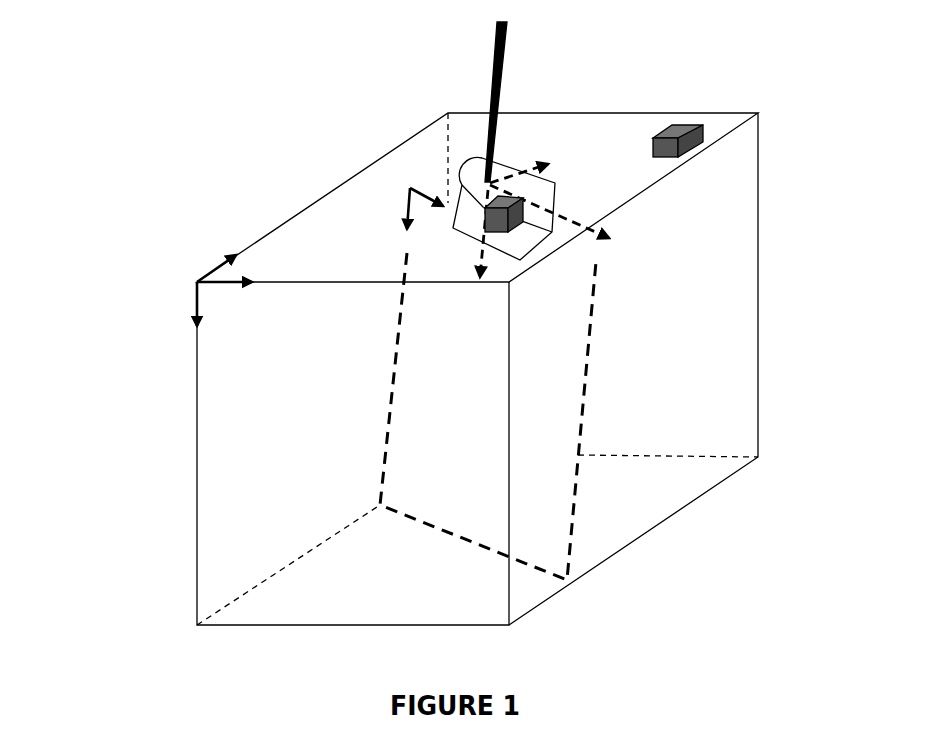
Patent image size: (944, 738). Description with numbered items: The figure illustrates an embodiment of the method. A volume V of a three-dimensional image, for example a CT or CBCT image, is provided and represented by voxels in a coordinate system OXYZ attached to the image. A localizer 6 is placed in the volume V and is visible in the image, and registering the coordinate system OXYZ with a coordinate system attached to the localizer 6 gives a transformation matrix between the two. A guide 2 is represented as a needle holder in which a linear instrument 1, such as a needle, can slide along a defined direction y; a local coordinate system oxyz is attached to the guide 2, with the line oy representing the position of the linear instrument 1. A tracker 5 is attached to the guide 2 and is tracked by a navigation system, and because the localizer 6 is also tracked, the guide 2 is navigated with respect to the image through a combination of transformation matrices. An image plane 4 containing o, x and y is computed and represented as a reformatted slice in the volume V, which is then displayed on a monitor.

The linear instrument 1 is at (533, 43).
The guide 2 is at (553, 185).
The image plane 4 is at (580, 523).
The tracker 5 is at (492, 203).
The localizer 6 is at (680, 125).
The volume V is at (197, 552).